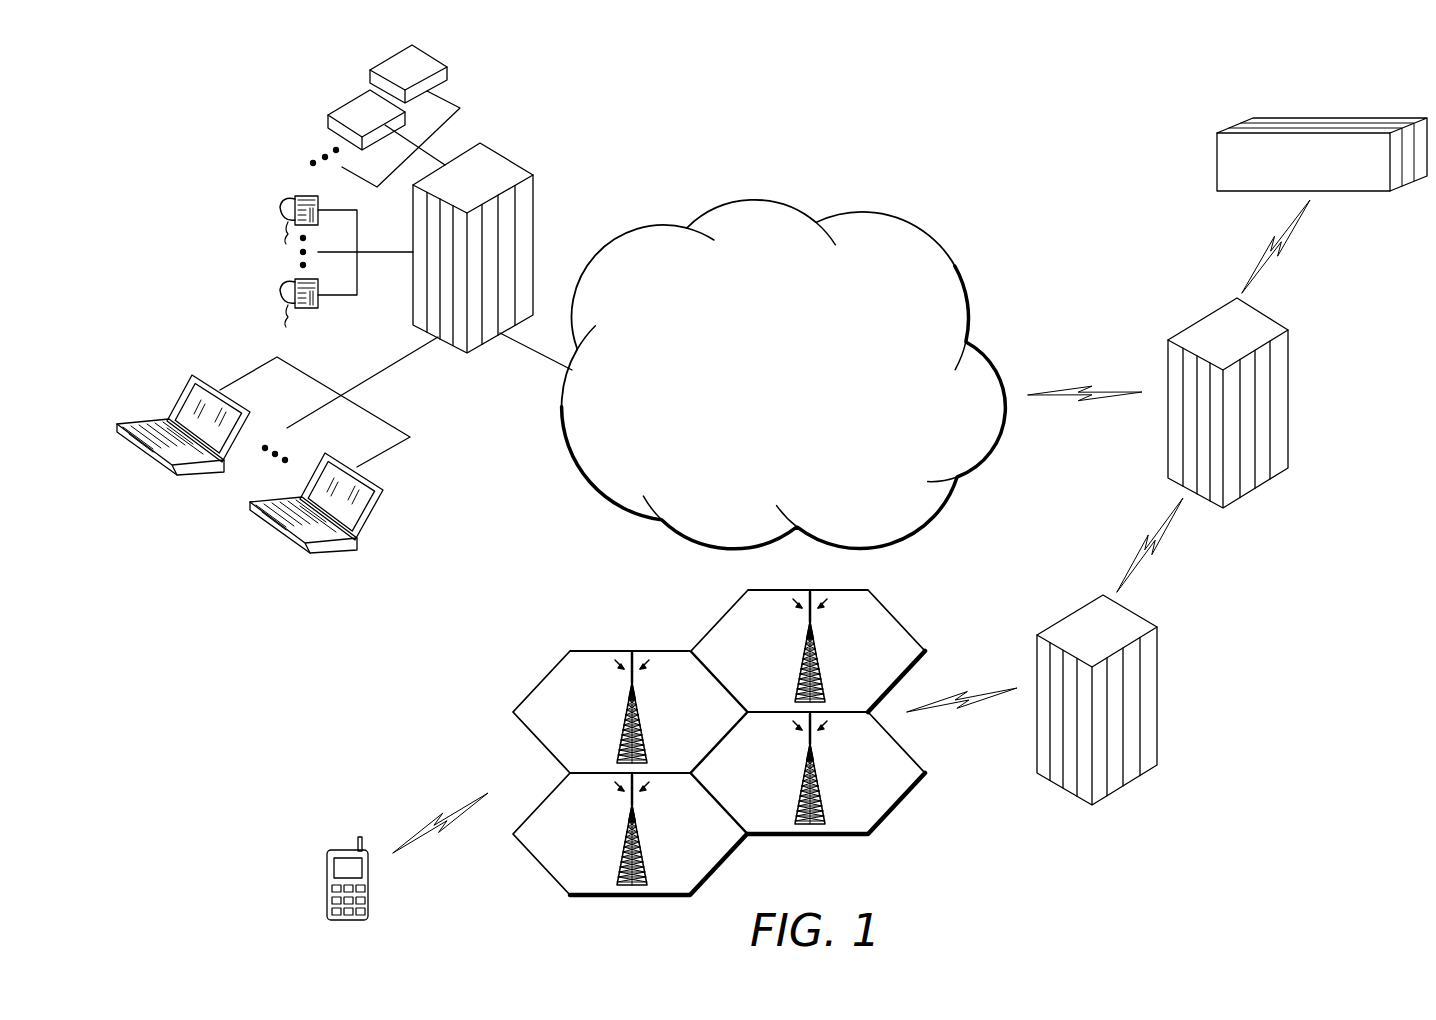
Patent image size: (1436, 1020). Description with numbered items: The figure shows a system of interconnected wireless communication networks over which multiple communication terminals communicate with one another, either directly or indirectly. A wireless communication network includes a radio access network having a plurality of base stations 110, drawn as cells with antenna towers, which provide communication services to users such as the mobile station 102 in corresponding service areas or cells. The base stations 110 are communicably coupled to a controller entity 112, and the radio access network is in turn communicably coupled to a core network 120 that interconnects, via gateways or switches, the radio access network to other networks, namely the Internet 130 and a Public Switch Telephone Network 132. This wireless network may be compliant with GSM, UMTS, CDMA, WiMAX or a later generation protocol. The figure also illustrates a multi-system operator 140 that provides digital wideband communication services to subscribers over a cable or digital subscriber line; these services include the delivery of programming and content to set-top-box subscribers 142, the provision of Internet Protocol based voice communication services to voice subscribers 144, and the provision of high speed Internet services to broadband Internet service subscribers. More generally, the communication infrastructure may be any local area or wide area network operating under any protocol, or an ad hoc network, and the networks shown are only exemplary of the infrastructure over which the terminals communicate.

The mobile station 102 is at (327, 885).
The base stations 110 is at (900, 806).
The controller entity 112 is at (1157, 697).
The core network 120 is at (1288, 400).
The Internet 130 is at (753, 198).
The Public Switch Telephone Network (PSTN) 132 is at (1217, 162).
The multiple system operator (MSO) 140 is at (533, 210).
The set-top-box (STB) subscribers 142 is at (447, 72).
The voice subscribers 144 is at (280, 207).